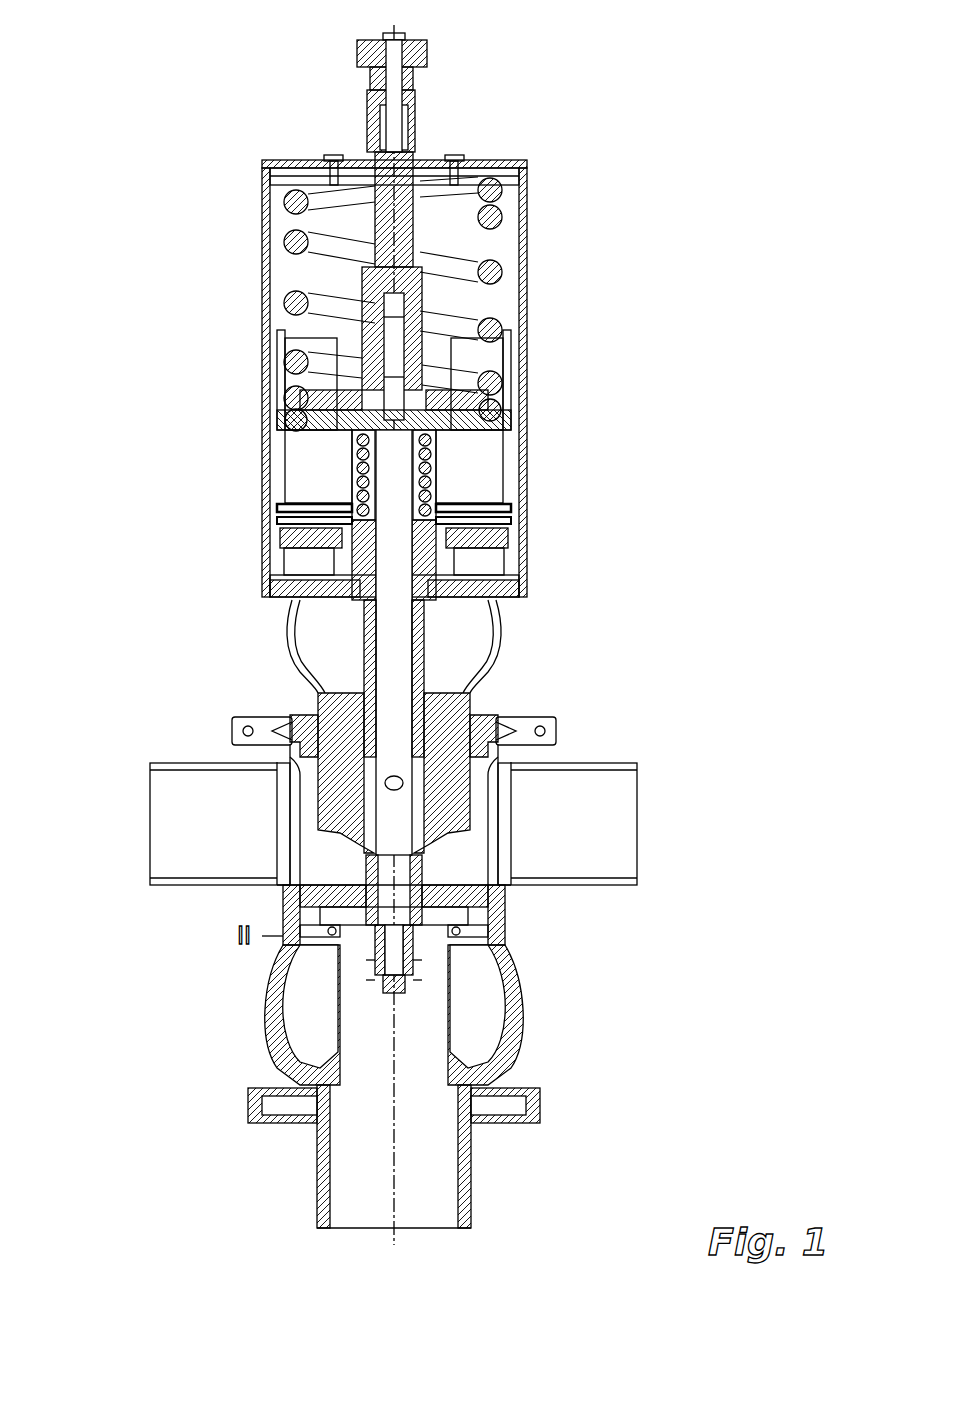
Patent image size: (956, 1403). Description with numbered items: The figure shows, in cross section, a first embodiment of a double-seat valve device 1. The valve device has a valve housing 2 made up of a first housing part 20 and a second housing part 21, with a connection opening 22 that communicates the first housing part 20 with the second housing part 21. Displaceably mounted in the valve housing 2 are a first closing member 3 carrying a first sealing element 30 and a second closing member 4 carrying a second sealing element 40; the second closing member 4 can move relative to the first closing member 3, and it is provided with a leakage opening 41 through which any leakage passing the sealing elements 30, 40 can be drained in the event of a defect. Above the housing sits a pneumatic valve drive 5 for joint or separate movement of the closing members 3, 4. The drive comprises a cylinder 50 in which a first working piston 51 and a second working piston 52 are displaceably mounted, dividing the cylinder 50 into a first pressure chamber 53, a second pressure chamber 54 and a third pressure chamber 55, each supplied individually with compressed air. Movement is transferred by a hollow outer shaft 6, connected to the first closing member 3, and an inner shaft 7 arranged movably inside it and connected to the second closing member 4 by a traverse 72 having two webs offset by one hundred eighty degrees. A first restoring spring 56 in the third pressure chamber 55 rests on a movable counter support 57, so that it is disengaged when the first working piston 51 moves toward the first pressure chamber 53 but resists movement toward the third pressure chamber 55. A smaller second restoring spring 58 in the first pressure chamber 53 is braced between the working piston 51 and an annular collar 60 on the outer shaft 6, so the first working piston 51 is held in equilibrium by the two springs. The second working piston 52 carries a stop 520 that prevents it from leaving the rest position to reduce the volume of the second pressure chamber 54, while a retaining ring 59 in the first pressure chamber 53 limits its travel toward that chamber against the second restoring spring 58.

The double-seat valve device 1 is at (516, 88).
The valve housing 2 is at (578, 702).
The first closing member 3 is at (455, 898).
The second closing member 4 is at (422, 958).
The pneumatic valve drive 5 is at (646, 212).
The outer shaft 6 is at (365, 625).
The inner shaft 7 is at (386, 812).
The first housing part 20 is at (616, 768).
The second housing part 21 is at (520, 1032).
The connection opening 22 is at (300, 985).
The first sealing element 30 is at (470, 906).
The second sealing element 40 is at (475, 942).
The leakage opening 41 is at (330, 1150).
The cylinder 50 is at (522, 340).
The first working piston 51 is at (330, 445).
The second working piston 52 is at (470, 540).
The first pressure chamber 53 is at (497, 455).
The second pressure chamber 54 is at (475, 573).
The third pressure chamber 55 is at (500, 300).
The first restoring spring 56 is at (290, 300).
The counter support 57 is at (277, 345).
The second restoring spring 58 is at (432, 470).
The retaining ring 59 is at (475, 513).
The annular collar 60 is at (283, 520).
The traverse 72 is at (425, 966).
The stop 520 is at (480, 580).